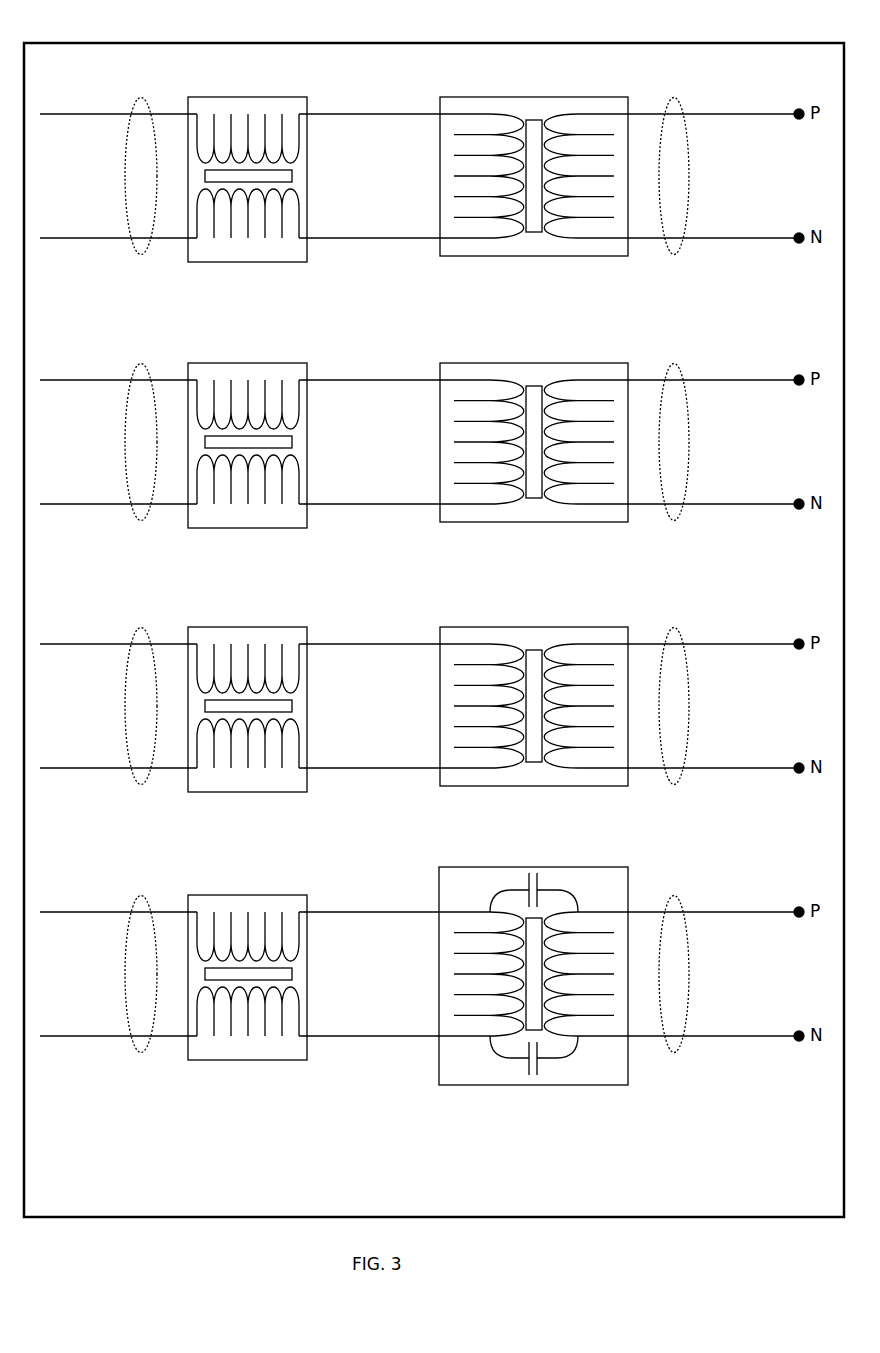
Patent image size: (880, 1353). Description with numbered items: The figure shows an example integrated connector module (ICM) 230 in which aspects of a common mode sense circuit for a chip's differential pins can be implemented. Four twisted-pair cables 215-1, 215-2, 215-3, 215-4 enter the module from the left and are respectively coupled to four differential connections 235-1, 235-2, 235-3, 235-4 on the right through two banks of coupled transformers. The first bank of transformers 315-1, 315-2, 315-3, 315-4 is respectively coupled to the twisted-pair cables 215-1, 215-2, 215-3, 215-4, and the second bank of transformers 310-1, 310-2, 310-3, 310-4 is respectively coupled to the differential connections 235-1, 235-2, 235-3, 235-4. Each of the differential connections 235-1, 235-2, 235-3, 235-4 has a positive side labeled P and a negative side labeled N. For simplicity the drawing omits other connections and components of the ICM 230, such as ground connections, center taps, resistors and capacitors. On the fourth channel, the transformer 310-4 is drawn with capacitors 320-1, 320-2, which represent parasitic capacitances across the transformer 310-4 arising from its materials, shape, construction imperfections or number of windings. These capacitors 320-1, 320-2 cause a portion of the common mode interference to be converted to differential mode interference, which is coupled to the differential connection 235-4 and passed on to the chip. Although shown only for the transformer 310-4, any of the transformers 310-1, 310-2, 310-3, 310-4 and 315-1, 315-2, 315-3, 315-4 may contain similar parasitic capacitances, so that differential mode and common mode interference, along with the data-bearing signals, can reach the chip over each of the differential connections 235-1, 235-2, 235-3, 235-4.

The integrated connector module (ICM) 230 is at (404, 1203).
The twisted-pair cable 215-1 is at (141, 97).
The twisted-pair cable 215-2 is at (94, 428).
The twisted-pair cable 215-3 is at (94, 692).
The twisted-pair cable 215-4 is at (94, 960).
The transformer 315-1 is at (250, 97).
The transformer 315-2 is at (271, 431).
The transformer 315-3 is at (271, 695).
The transformer 315-4 is at (271, 963).
The transformer 310-1 is at (532, 97).
The transformer 310-2 is at (525, 428).
The transformer 310-3 is at (525, 692).
The transformer 310-4 is at (502, 867).
The differential connection 235-1 is at (676, 97).
The differential connection 235-2 is at (718, 428).
The differential connection 235-3 is at (718, 692).
The differential connection 235-4 is at (718, 960).
The capacitor 320-1 is at (542, 877).
The capacitor 320-2 is at (542, 1070).